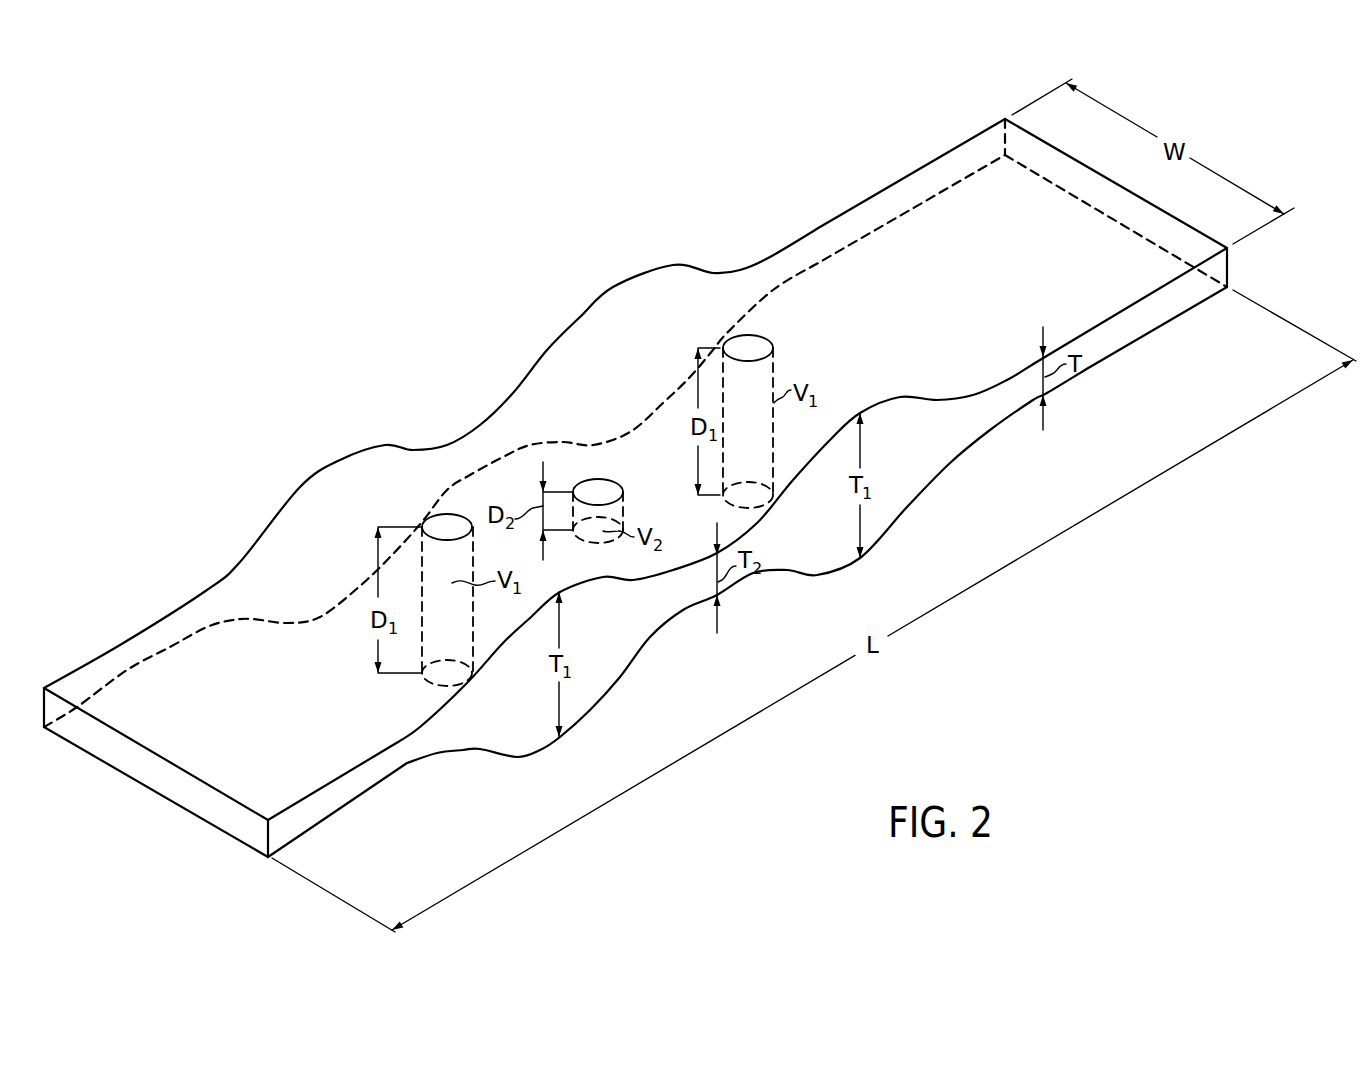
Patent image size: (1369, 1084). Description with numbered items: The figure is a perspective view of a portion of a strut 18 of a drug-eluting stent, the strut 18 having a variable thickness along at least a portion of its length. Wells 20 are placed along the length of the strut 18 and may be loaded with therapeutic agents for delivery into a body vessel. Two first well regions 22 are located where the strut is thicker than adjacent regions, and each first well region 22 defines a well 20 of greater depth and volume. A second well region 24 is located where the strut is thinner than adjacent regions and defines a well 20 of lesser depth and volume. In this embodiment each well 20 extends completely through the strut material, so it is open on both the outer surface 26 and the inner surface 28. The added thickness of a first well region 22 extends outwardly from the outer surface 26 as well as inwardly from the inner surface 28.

The strut 18 is at (635, 488).
The well 20 is at (599, 494).
The first well region 22 is at (432, 520).
The second well region 24 is at (620, 484).
The outer surface 26 is at (930, 249).
The inner surface 28 is at (1163, 327).